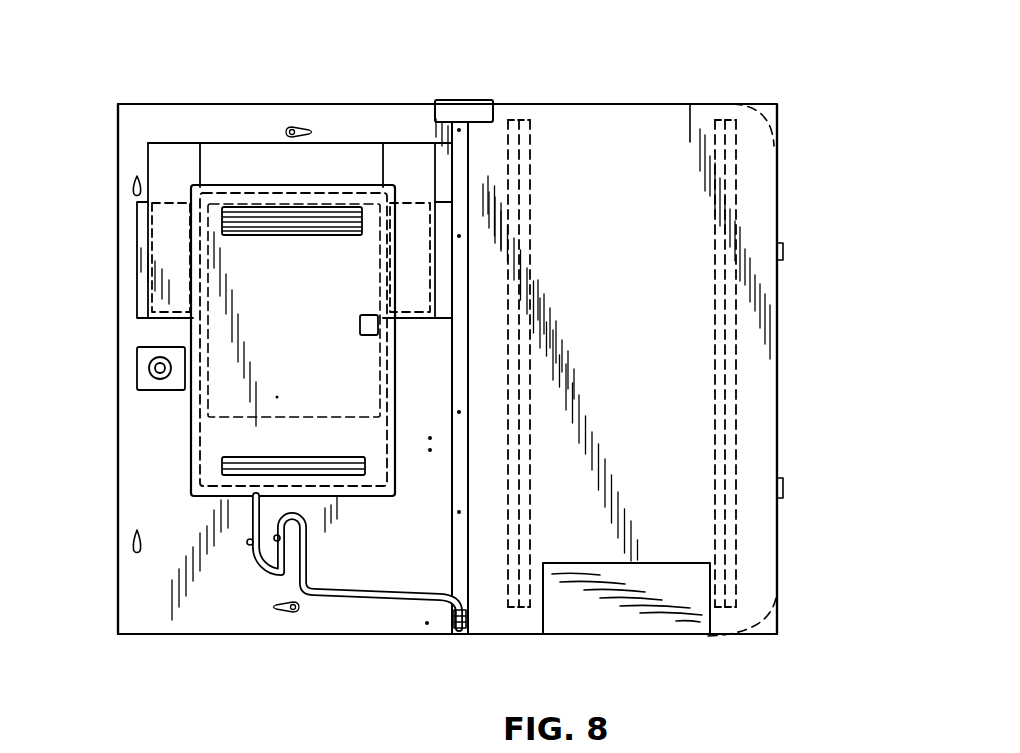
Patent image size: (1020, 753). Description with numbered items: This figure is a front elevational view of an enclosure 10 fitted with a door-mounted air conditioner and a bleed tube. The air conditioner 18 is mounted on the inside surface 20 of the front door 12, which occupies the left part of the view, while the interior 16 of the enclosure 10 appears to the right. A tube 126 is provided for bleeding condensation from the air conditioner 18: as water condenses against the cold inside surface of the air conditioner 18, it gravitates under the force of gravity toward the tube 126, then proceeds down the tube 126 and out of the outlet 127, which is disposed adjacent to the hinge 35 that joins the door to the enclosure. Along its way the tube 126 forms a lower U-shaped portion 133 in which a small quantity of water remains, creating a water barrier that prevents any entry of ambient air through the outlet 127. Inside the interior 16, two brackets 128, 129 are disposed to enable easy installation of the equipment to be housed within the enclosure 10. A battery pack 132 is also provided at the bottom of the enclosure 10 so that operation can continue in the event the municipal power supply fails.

The enclosure 10 is at (712, 75).
The front door 12 is at (118, 402).
The interior 16 is at (651, 511).
The air conditioner 18 is at (187, 465).
The inside surface 20 is at (162, 553).
The hinge 35 is at (468, 162).
The tube 126 is at (248, 558).
The outlet 127 is at (467, 610).
The bracket 128 is at (528, 182).
The bracket 129 is at (727, 416).
The battery pack 132 is at (667, 622).
The lower U-shaped portion 133 is at (265, 572).